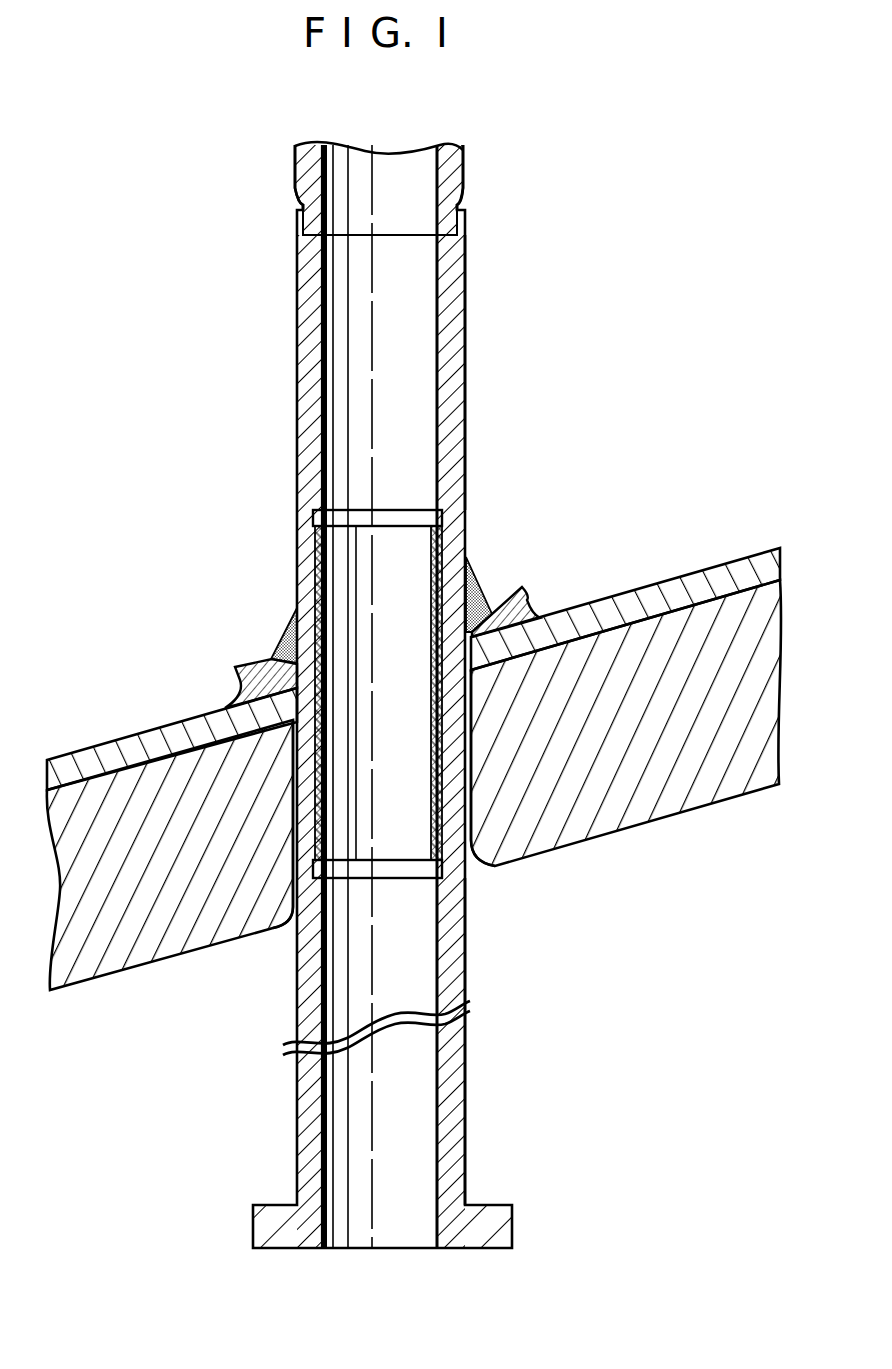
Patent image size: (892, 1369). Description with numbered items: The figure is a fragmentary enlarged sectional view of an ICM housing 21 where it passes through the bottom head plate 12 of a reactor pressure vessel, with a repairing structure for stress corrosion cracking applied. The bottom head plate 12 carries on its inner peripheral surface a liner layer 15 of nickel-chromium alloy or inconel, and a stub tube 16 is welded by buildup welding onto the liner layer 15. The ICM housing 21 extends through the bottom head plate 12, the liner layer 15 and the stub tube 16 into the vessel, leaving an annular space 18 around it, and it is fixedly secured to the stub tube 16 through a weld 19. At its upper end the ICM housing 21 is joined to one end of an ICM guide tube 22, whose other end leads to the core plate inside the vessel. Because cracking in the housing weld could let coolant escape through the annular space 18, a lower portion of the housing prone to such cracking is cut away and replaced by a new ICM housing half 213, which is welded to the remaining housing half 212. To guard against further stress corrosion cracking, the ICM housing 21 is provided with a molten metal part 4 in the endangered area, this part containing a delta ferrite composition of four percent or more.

The molten metal part 4 is at (323, 593).
The bottom head plate 12 is at (653, 820).
The liner layer 15 is at (728, 573).
The stub tube 16 is at (530, 602).
The annular space 18 is at (480, 867).
The weld 19 is at (478, 580).
The ICM housing 21 is at (414, 695).
The ICM guide tube 22 is at (465, 172).
The remaining housing half 212 is at (450, 362).
The new ICM housing half 213 is at (457, 973).